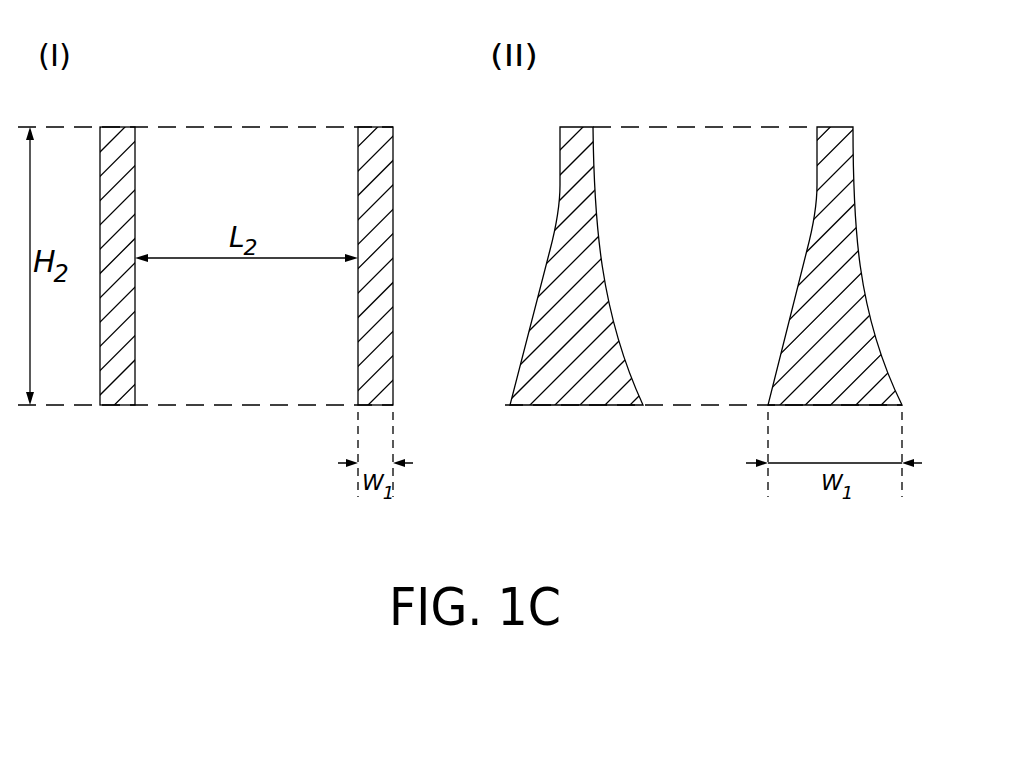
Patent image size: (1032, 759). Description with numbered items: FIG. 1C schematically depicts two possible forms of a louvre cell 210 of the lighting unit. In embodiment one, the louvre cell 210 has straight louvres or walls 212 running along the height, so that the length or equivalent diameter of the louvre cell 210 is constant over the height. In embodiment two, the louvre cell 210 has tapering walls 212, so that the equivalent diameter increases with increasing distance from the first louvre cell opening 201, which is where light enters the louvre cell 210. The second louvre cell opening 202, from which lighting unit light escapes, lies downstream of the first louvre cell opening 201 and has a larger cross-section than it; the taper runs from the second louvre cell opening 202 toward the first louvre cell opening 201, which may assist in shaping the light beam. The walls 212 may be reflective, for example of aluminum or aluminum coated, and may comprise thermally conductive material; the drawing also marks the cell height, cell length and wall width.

The louvre cell 210 is at (516, 379).
The second louvre cell opening 202 is at (261, 126).
The first louvre cell opening 201 is at (230, 410).
The walls 212 is at (388, 182).